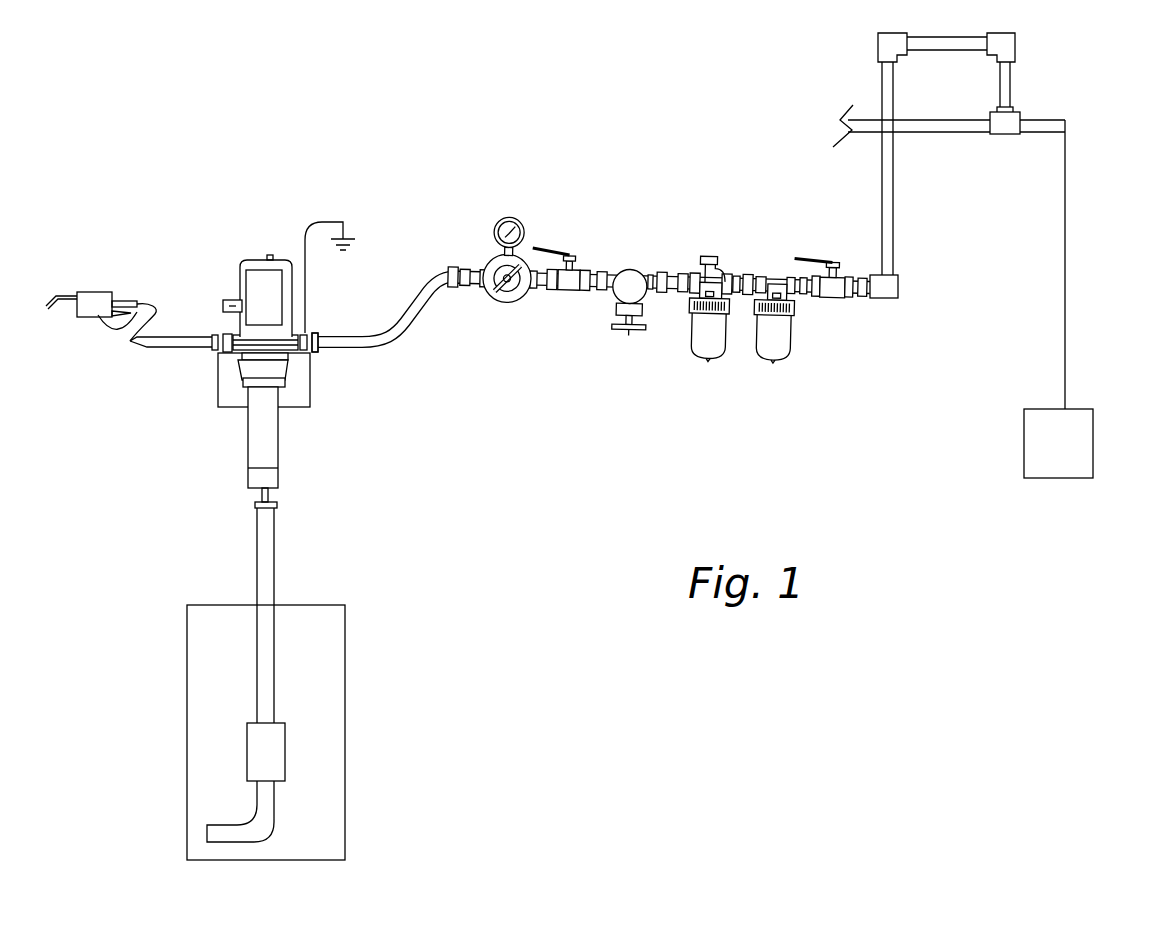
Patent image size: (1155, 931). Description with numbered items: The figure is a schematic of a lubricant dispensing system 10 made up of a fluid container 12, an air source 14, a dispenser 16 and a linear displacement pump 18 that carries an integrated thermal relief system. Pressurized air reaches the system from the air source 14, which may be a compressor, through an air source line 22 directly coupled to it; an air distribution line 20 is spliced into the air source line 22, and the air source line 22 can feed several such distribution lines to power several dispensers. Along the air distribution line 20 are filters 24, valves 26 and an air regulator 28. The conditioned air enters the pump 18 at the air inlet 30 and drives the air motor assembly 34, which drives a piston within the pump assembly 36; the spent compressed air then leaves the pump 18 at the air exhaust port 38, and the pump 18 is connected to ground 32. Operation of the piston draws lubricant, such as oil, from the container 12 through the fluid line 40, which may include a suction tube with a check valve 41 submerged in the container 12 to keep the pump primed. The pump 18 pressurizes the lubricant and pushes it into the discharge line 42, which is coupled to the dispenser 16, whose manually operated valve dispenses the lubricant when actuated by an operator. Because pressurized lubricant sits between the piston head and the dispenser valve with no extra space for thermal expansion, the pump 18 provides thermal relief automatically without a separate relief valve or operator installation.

The lubricant dispensing system 10 is at (658, 268).
The fluid container 12 is at (345, 686).
The air source 14 is at (1071, 455).
The dispenser 16 is at (110, 280).
The linear displacement pump 18 is at (255, 283).
The air distribution line 20 is at (893, 188).
The air source line 22 is at (1064, 212).
The filters 24 is at (763, 377).
The valves 26 is at (827, 262).
The air regulator 28 is at (508, 303).
The air inlet 30 is at (320, 344).
The ground 32 is at (330, 220).
The air motor assembly 34 is at (268, 291).
The pump assembly 36 is at (268, 455).
The air exhaust port 38 is at (222, 306).
The fluid line 40 is at (275, 545).
The check valve 41 is at (285, 753).
The discharge line 42 is at (160, 349).